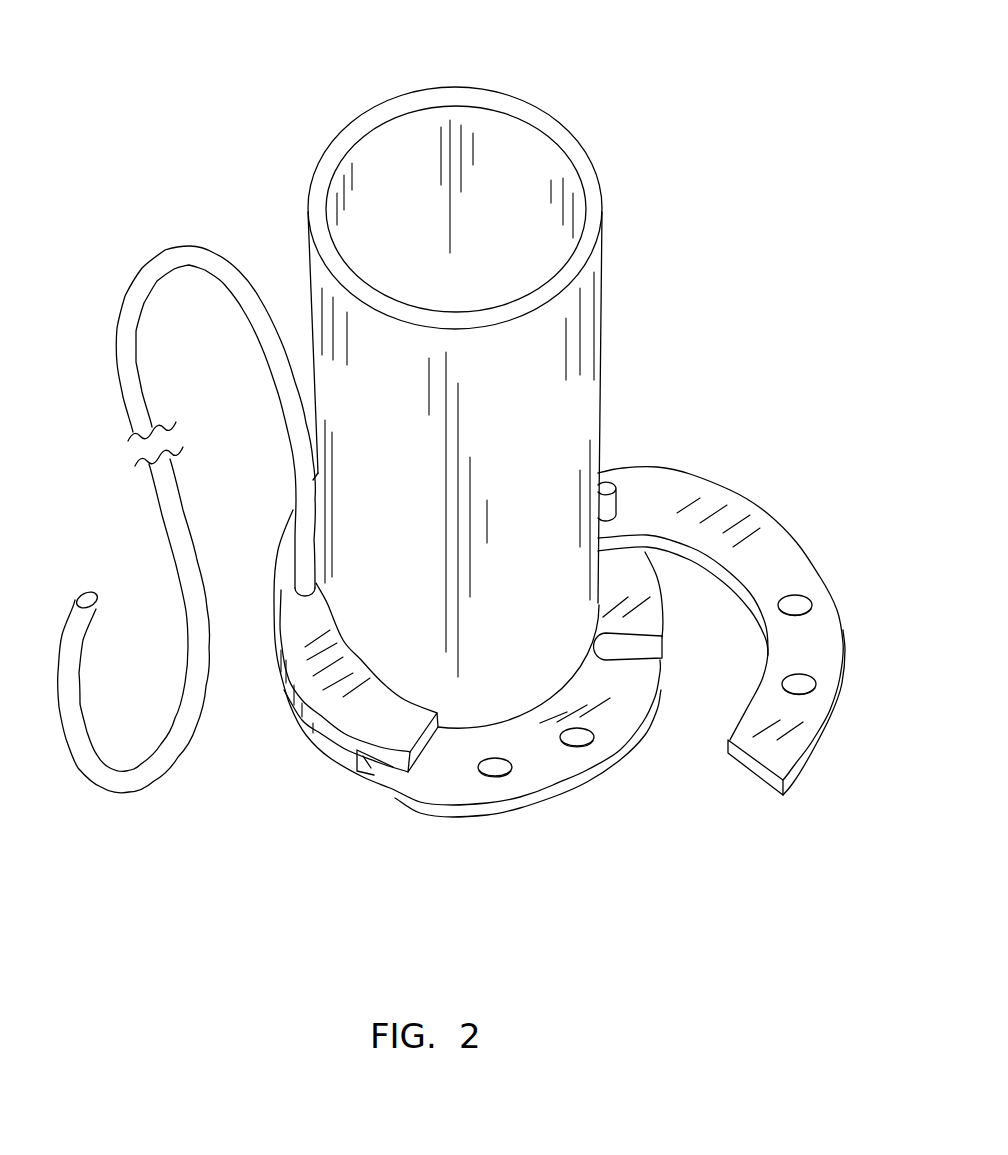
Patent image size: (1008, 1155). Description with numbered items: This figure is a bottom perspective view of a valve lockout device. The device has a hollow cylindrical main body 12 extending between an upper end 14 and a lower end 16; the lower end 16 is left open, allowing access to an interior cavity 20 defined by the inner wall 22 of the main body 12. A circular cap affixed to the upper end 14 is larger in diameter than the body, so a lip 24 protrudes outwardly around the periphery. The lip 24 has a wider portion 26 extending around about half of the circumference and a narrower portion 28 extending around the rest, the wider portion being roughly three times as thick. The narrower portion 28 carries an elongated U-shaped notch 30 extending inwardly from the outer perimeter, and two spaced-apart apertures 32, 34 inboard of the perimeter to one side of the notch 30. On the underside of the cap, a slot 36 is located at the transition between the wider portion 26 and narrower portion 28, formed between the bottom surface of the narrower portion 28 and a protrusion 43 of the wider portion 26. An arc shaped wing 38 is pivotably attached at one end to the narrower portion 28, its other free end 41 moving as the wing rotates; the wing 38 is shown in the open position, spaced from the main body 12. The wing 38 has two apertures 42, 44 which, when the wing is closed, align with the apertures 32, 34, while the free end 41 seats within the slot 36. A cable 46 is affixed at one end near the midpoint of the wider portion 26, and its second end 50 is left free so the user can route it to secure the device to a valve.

The main body 12 is at (560, 333).
The upper end 14 is at (510, 723).
The lower end 16 is at (603, 197).
The interior cavity 20 is at (492, 140).
The inner wall 22 is at (558, 148).
The lip 24 is at (440, 783).
The wider portion 26 is at (320, 687).
The narrower portion 28 is at (610, 712).
The U-shaped notch 30 is at (643, 648).
The aperture 32 is at (576, 740).
The aperture 34 is at (495, 775).
The slot 36 is at (357, 759).
The arc shaped wing 38 is at (711, 498).
The free end 41 is at (762, 760).
The aperture 42 is at (796, 604).
The protrusion 43 is at (393, 767).
The aperture 44 is at (802, 684).
The cable 46 is at (173, 260).
The second end 50 is at (86, 596).